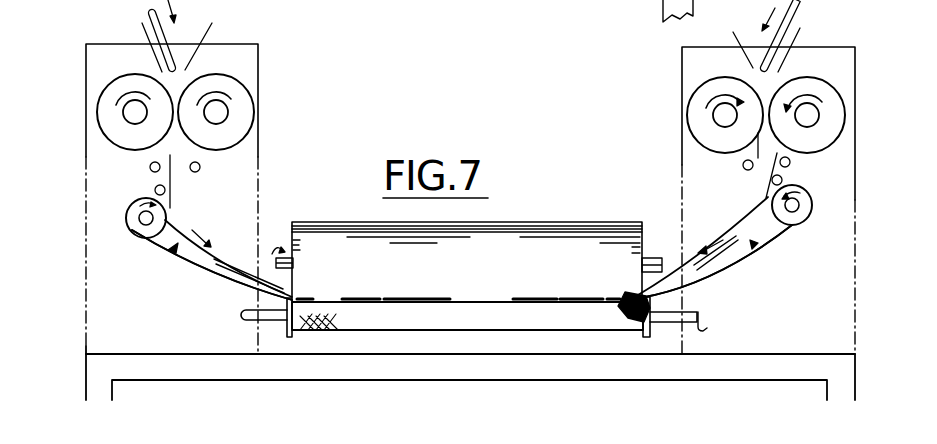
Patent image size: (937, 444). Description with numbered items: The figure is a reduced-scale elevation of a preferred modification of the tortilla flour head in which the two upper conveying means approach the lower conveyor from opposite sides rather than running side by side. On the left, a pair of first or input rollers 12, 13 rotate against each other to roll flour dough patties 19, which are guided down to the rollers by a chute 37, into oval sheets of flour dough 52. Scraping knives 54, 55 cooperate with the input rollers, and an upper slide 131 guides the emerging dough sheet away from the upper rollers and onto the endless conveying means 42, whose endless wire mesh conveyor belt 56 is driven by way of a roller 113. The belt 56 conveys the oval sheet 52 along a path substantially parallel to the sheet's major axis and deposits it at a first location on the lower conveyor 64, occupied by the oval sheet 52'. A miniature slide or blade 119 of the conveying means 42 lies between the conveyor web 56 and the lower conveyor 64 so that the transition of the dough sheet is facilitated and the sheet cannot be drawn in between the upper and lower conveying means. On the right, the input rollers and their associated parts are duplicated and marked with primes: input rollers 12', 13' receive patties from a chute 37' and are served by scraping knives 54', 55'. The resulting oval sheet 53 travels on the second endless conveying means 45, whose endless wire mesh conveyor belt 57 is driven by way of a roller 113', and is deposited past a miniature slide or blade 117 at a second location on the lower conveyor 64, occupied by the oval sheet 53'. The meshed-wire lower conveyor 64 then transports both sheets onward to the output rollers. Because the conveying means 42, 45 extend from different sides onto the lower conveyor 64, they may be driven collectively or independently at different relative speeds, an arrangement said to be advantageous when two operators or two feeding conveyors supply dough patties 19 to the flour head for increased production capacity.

The input roller 12 is at (243, 112).
The input roller 13 is at (96, 112).
The flour dough patty 19 is at (176, 40).
The chute 37 is at (118, 36).
The endless conveying means 42 is at (172, 250).
The endless conveying means 45 is at (760, 246).
The oval sheet of flour dough 52 is at (249, 259).
The oval sheet of flour dough 52' is at (373, 281).
The oval sheet of flour dough 53 is at (716, 236).
The oval sheet of flour dough 53' is at (566, 281).
The scraping knife 54 is at (223, 172).
The scraping knife 55 is at (132, 172).
The endless wire mesh conveyor belt 56 is at (225, 272).
The endless wire mesh conveyor belt 57 is at (718, 277).
The lower conveyor 64 is at (488, 277).
The roller 113 is at (131, 244).
The miniature slide or blade 117 is at (619, 297).
The miniature slide or blade 119 is at (343, 252).
The upper slide 131 is at (172, 183).
The input roller 12' is at (836, 115).
The input roller 13' is at (700, 115).
The chute 37' is at (728, 44).
The scraping knife 54' is at (831, 165).
The scraping knife 55' is at (725, 170).
The roller 113' is at (821, 198).